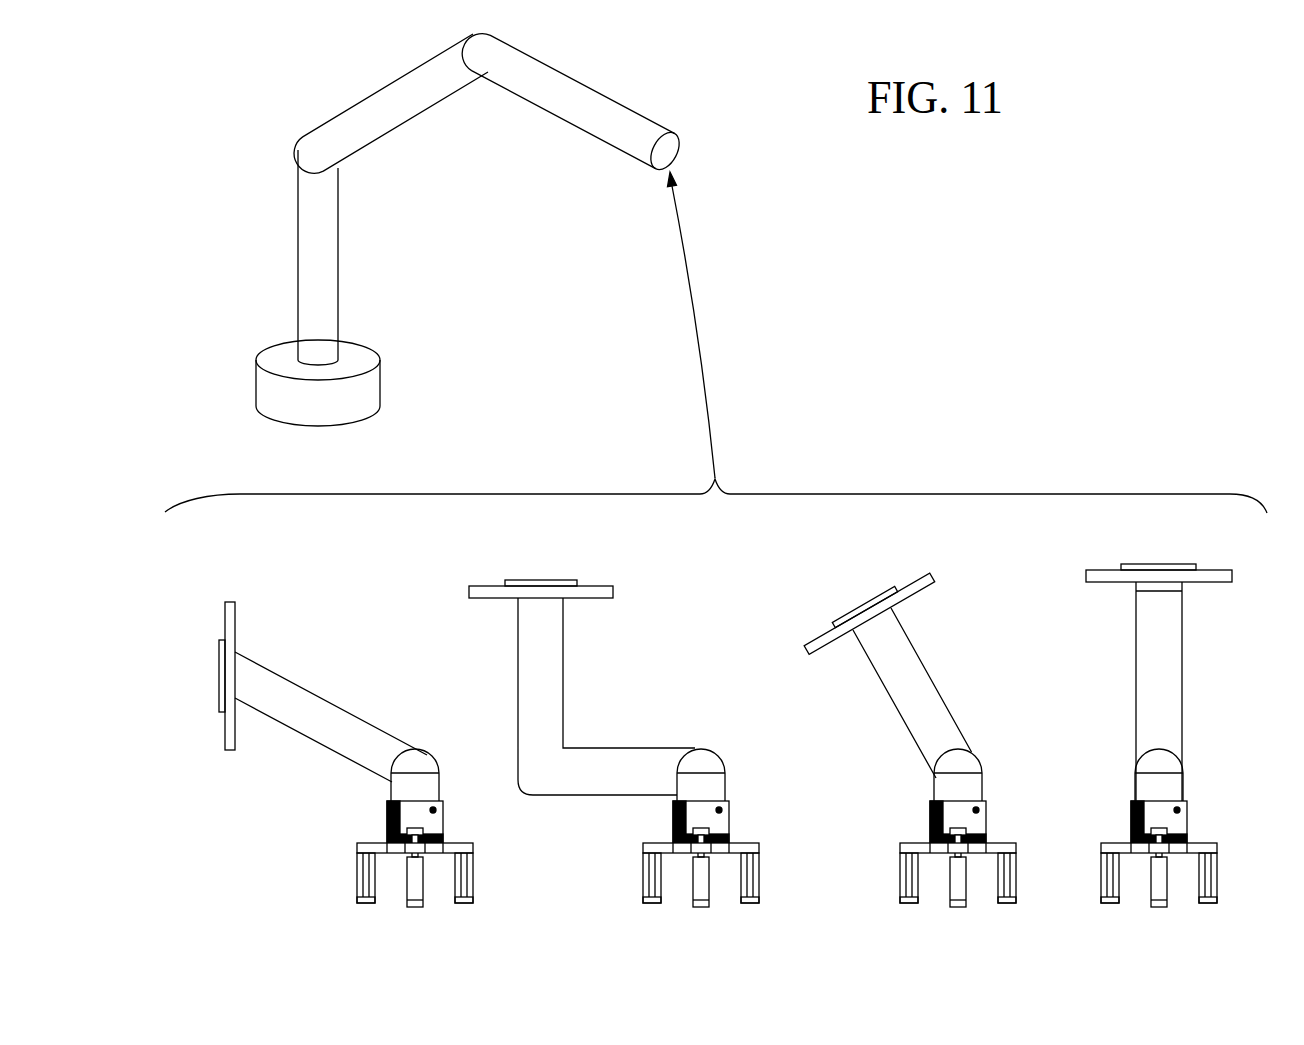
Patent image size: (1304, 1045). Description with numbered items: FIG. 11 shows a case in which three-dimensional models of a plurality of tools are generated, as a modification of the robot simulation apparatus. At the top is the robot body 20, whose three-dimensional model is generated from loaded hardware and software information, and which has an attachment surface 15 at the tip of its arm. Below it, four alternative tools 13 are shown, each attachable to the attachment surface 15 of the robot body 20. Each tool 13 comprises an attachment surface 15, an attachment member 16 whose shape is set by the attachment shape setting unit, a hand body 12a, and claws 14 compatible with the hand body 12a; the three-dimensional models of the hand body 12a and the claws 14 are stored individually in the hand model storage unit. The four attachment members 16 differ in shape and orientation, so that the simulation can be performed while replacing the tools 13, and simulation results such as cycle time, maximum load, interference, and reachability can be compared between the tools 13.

The robot body 20 is at (273, 107).
The tool 13 is at (718, 730).
The attachment surface 15 is at (223, 620).
The attachment member 16 is at (304, 689).
The hand body 12a is at (443, 811).
The claws 14 is at (473, 876).